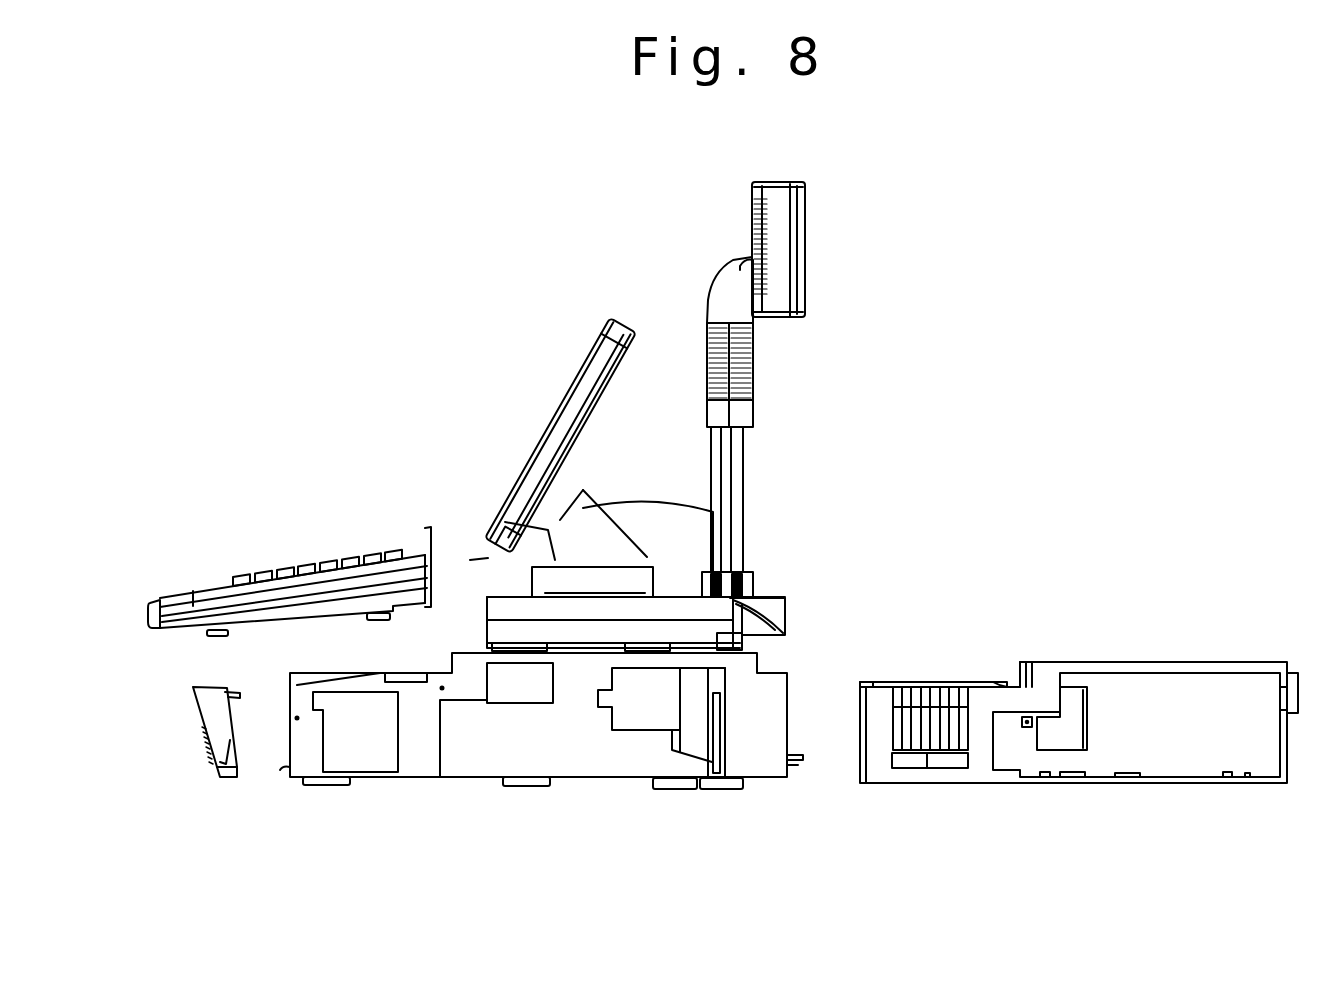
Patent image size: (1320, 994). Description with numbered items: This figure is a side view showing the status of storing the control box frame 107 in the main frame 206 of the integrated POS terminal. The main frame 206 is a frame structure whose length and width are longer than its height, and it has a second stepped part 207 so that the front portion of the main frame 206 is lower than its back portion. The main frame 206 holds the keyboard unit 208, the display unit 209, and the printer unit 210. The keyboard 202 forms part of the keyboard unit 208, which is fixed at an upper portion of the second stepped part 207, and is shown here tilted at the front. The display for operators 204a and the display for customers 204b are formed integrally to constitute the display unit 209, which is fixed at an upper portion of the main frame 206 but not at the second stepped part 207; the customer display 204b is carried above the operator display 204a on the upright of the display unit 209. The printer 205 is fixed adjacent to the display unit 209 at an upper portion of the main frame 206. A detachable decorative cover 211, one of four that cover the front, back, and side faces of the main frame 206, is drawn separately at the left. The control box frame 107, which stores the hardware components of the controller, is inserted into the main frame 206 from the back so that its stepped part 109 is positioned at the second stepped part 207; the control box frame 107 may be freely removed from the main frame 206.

The keyboard 202 is at (313, 560).
The keyboard unit 208 is at (413, 543).
The display for operators 204a is at (573, 380).
The display for customers 204b is at (802, 200).
The printer 205 is at (645, 503).
The printer unit 210 is at (687, 496).
The display unit 209 is at (777, 582).
The second stepped part 207 is at (452, 670).
The main frame 206 is at (422, 755).
The detachable decorative cover 211 is at (193, 710).
The control box frame 107 is at (1125, 660).
The stepped part 109 is at (1007, 683).